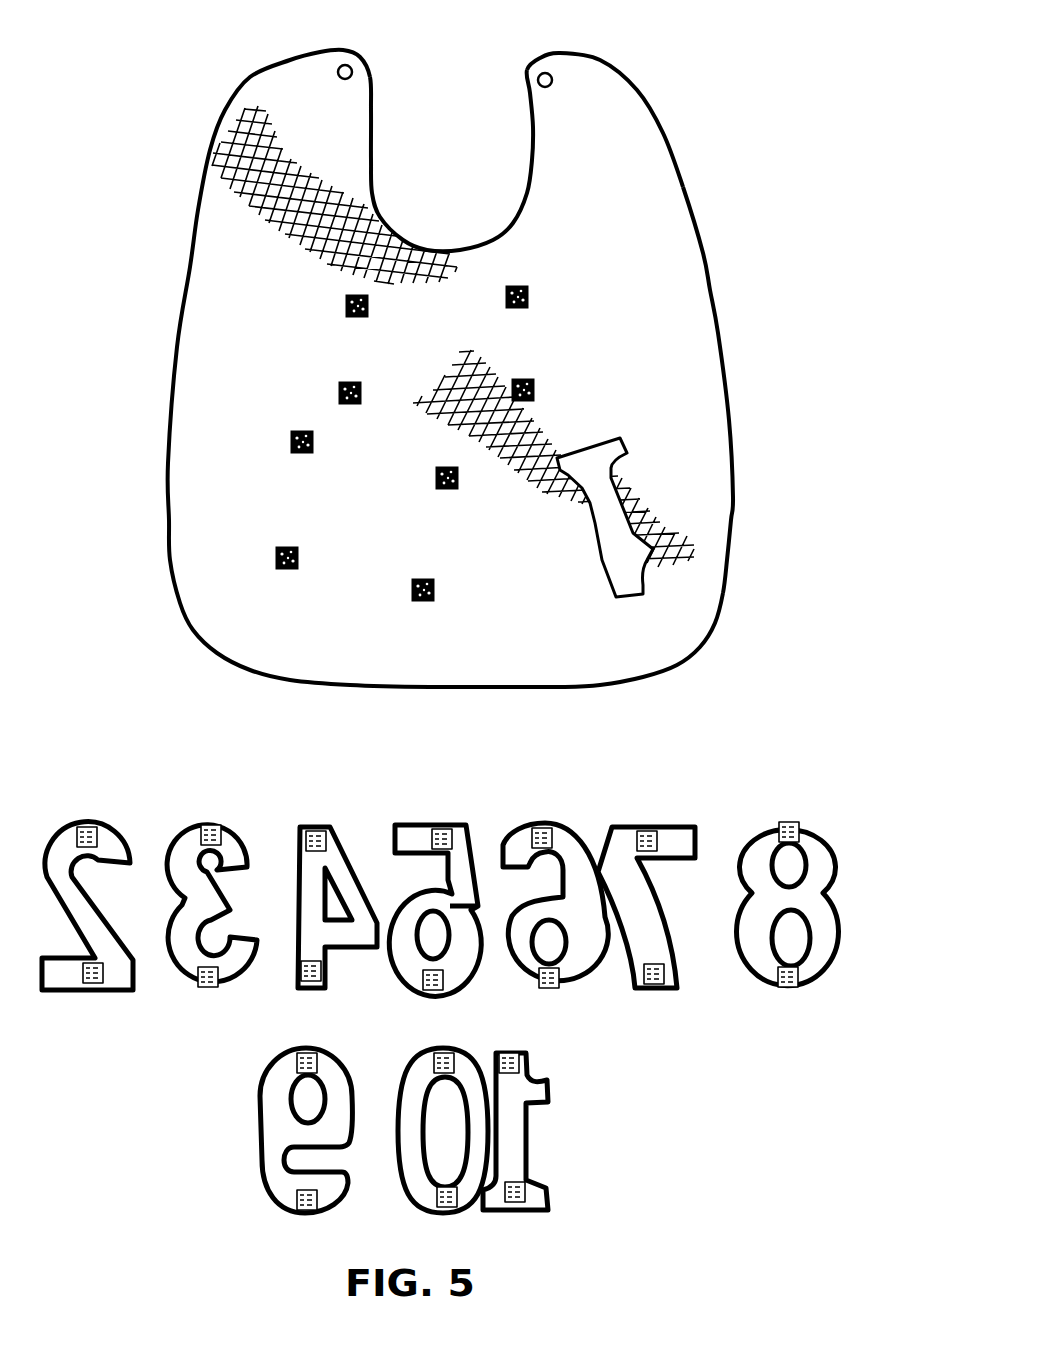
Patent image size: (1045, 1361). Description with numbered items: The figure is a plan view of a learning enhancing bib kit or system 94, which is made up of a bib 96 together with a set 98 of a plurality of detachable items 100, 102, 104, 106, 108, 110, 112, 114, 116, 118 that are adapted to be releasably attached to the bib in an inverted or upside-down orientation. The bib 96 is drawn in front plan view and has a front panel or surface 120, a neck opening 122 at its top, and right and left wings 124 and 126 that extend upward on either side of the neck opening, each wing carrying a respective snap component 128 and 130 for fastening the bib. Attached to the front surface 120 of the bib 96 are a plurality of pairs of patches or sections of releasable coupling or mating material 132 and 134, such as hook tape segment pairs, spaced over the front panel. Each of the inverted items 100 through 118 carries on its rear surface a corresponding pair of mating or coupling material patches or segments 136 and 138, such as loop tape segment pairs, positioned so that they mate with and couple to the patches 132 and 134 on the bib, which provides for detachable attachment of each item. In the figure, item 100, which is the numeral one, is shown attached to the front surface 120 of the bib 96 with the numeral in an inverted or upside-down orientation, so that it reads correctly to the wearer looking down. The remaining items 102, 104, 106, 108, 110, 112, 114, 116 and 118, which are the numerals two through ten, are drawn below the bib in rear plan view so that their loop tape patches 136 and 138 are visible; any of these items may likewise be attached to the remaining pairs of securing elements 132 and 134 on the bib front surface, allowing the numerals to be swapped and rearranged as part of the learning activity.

The learning enhancing bib kit 94 is at (744, 478).
The bib 96 is at (655, 215).
The set of detachable items 98 is at (640, 822).
The item 100 is at (602, 560).
The item 102 is at (80, 993).
The item 104 is at (198, 990).
The item 106 is at (328, 830).
The item 108 is at (392, 968).
The item 110 is at (504, 833).
The item 112 is at (650, 990).
The item 114 is at (752, 975).
The item 116 is at (278, 1176).
The item 118 is at (552, 1128).
The front panel 120 is at (692, 374).
The neck opening 122 is at (390, 208).
The right wing 124 is at (628, 104).
The left wing 126 is at (272, 76).
The snap component 128 is at (536, 70).
The snap component 130 is at (340, 62).
The patch of releasable coupling material 132 is at (353, 294).
The patch of releasable coupling material 134 is at (345, 384).
The mating coupling material patch 136 is at (214, 822).
The mating coupling material patch 138 is at (200, 987).